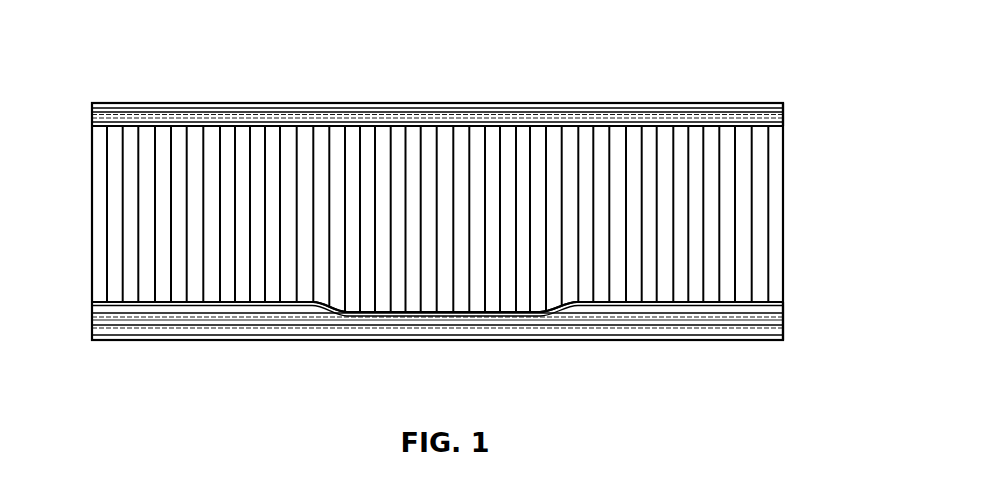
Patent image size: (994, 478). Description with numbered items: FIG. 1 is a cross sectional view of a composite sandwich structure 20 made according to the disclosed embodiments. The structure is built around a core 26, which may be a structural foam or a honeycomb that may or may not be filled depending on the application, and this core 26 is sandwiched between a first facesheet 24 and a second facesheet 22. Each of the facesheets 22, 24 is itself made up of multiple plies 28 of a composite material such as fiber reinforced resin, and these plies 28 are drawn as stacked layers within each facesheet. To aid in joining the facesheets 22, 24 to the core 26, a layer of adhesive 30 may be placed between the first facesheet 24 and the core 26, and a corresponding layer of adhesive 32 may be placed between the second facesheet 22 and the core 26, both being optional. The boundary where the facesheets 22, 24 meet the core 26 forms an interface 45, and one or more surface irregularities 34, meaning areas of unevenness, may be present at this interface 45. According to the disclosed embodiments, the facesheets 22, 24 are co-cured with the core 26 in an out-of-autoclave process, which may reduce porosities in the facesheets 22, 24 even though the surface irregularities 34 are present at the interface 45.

The composite sandwich structure 20 is at (738, 82).
The second facesheet 22 is at (142, 110).
The first facesheet 24 is at (127, 326).
The core 26 is at (131, 225).
The plies 28 is at (445, 99).
The layer of adhesive 30 is at (96, 122).
The layer of adhesive 32 is at (100, 305).
The surface irregularities 34 is at (372, 326).
The interface 45 is at (796, 119).